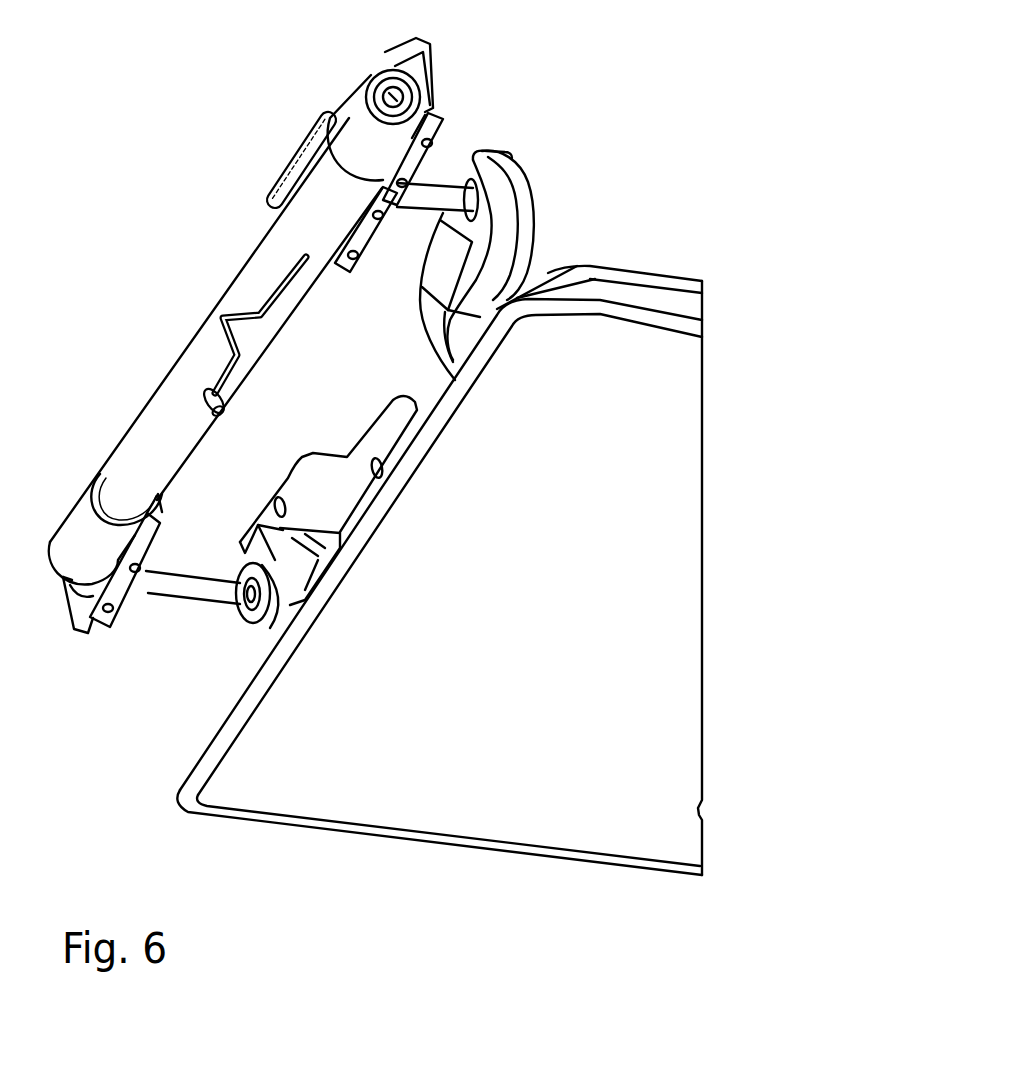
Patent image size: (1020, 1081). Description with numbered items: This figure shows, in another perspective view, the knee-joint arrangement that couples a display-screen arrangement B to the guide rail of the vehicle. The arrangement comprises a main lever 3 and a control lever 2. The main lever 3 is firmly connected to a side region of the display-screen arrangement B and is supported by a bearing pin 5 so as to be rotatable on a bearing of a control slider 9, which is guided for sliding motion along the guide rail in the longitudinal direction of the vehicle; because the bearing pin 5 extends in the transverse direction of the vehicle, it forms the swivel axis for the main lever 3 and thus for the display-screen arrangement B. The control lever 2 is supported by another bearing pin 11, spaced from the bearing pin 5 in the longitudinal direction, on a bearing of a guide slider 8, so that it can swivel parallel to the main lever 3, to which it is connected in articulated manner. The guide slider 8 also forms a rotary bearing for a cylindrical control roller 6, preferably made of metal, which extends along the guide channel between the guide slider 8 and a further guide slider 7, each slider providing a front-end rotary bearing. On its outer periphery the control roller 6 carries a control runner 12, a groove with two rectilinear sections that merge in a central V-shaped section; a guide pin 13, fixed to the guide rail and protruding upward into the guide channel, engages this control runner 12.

The control lever 2 is at (288, 478).
The main lever 3 is at (438, 258).
The bearing pin 5 is at (440, 193).
The control roller 6 is at (163, 413).
The guide slider 7 is at (353, 108).
The guide slider 8 is at (75, 527).
The control slider 9 is at (283, 163).
The bearing pin 11 is at (173, 593).
The control runner 12 is at (277, 307).
The guide pin 13 is at (225, 403).
The display-screen arrangement B is at (377, 810).